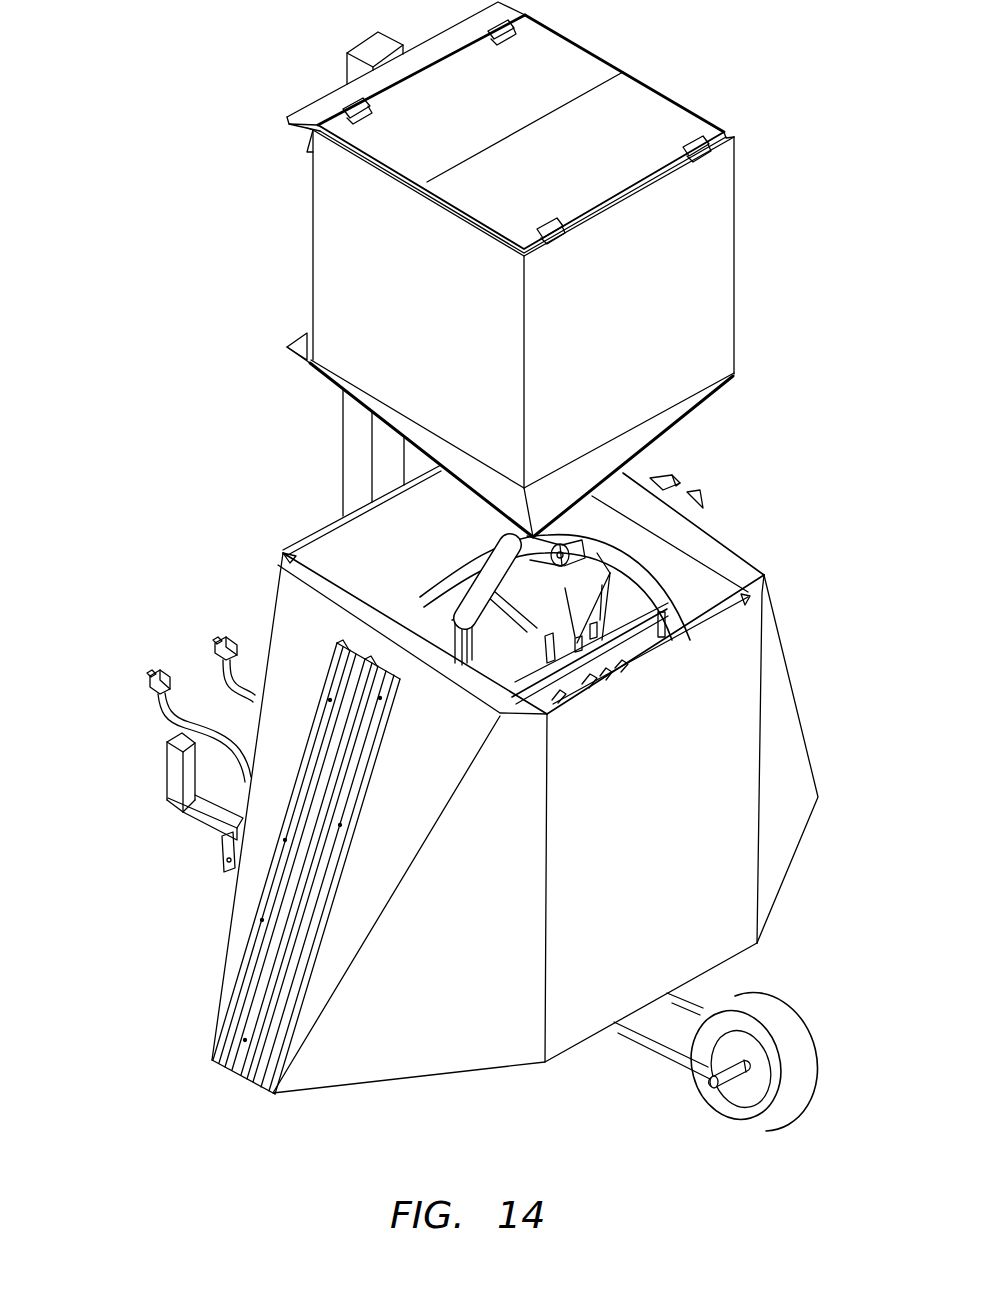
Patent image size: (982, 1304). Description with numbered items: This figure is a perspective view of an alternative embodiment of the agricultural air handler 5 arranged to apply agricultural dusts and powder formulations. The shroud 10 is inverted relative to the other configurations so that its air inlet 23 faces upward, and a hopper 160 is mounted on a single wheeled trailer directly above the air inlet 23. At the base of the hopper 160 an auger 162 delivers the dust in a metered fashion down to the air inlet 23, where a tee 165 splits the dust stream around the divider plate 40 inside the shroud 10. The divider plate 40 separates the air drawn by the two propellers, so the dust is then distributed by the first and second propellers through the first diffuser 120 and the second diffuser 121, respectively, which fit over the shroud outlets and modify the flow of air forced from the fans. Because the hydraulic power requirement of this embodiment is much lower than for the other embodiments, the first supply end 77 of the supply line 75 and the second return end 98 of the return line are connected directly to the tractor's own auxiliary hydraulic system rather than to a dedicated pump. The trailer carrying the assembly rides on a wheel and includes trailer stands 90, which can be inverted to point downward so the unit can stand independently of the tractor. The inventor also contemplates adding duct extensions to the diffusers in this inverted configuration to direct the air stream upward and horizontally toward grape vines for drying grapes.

The air handler 5 is at (116, 426).
The shroud 10 is at (202, 945).
The air inlet 23 is at (313, 533).
The divider plate 40 is at (517, 613).
The supply line 75 is at (247, 692).
The first supply end 77 is at (218, 638).
The trailer stands 90 is at (147, 673).
The second return end 98 is at (212, 722).
The first diffuser 120 is at (218, 1080).
The second diffuser 121 is at (678, 482).
The hopper 160 is at (714, 250).
The auger 162 is at (474, 512).
The tee 165 is at (470, 570).